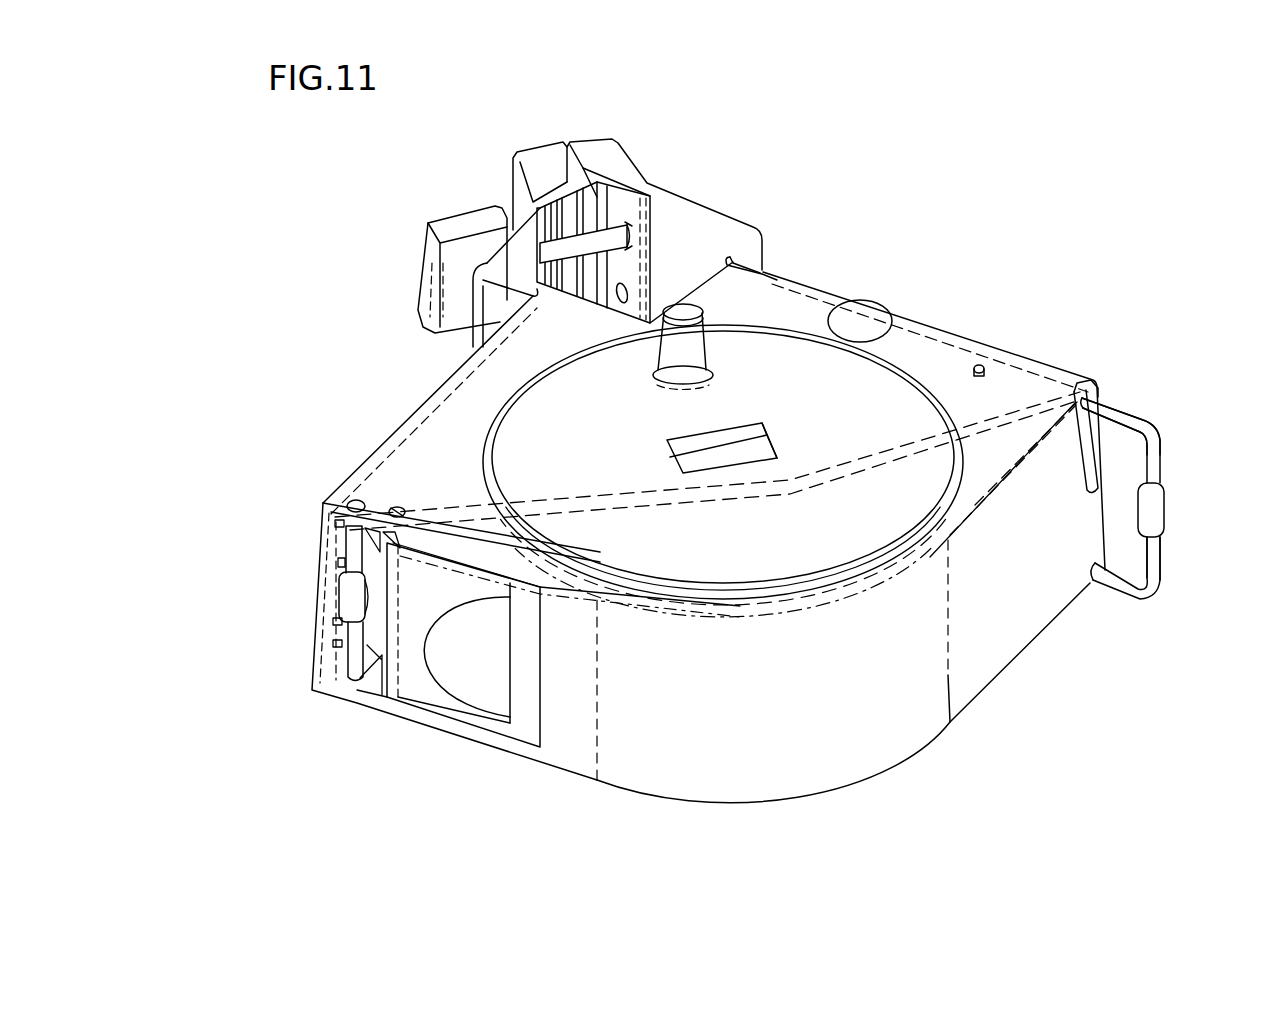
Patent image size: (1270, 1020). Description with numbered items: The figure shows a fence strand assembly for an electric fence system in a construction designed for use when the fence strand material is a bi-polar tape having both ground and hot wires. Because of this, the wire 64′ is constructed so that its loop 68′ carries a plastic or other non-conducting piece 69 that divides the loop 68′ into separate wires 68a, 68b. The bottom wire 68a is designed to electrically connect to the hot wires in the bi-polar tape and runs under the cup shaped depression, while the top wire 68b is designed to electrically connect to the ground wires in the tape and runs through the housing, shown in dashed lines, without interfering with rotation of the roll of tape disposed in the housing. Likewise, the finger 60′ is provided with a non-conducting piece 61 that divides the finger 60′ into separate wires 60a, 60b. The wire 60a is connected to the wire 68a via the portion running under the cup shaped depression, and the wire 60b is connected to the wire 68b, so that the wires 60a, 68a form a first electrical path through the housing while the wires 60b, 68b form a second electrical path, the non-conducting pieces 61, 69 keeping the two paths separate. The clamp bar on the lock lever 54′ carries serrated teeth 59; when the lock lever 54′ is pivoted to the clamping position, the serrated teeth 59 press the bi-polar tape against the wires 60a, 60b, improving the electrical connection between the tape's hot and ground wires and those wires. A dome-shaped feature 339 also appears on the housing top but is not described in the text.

The dome 339 is at (863, 312).
The wire 64′ is at (826, 458).
The lock lever 54′ is at (427, 686).
The wire 60b is at (350, 549).
The non-conducting piece 61 is at (348, 597).
The serrated teeth 59 is at (337, 643).
The wire 60a is at (295, 663).
The finger 60′ is at (346, 673).
The loop 68′ is at (1116, 600).
The top wire 68b is at (1120, 413).
The non-conducting piece 69 is at (1158, 505).
The bottom wire 68a is at (1161, 556).